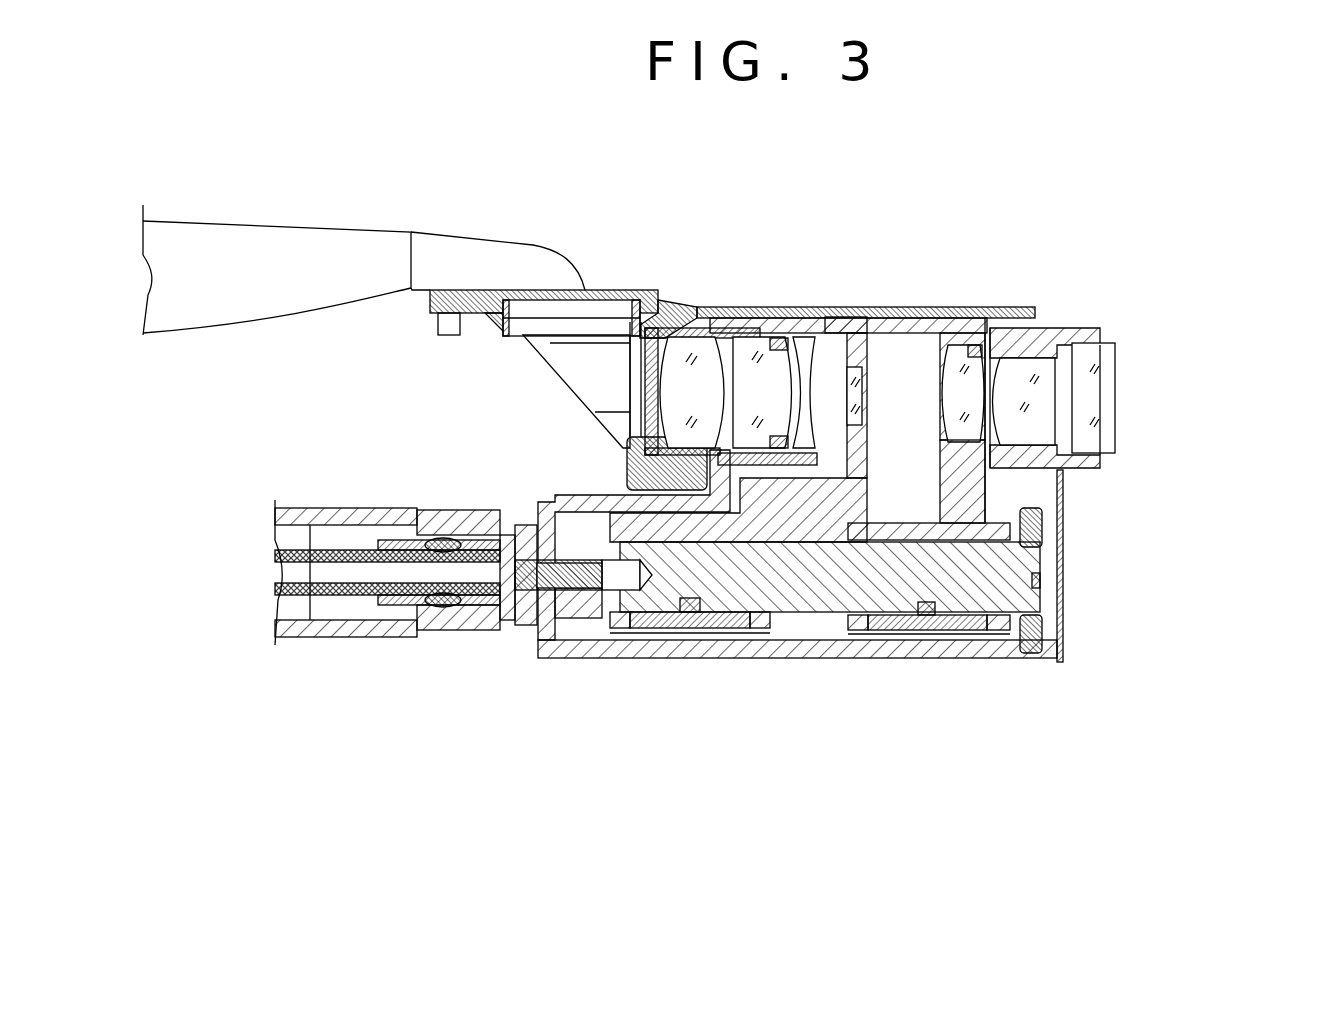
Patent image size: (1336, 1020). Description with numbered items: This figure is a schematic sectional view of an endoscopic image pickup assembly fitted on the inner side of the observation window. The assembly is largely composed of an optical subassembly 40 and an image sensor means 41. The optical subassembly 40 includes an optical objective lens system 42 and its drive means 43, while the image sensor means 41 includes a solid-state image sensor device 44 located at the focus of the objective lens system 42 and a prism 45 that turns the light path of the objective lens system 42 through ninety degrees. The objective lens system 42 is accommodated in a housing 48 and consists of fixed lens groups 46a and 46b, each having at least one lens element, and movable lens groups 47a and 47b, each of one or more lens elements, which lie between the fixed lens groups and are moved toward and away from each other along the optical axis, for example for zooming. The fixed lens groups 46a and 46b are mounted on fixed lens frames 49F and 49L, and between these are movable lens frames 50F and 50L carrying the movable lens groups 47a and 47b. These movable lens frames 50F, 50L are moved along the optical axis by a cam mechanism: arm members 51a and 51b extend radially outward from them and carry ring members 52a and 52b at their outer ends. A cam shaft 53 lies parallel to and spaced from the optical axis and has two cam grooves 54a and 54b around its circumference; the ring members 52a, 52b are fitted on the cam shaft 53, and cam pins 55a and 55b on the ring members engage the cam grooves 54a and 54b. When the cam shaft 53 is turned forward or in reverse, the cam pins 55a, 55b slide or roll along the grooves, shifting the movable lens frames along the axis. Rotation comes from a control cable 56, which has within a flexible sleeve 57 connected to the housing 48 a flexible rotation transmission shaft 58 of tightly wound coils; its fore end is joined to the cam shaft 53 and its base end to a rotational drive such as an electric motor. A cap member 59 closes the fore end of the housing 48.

The optical subassembly 40 is at (996, 700).
The image sensor means 41 is at (518, 355).
The optical objective lens system 42 is at (1138, 380).
The drive means 43 is at (524, 668).
The solid-state image sensor device 44 is at (595, 327).
The prism 45 is at (590, 388).
The fixed lens group 46a is at (1032, 415).
The fixed lens group 46b is at (717, 363).
The movable lens group 47a is at (970, 362).
The movable lens group 47b is at (862, 395).
The housing 48 is at (1013, 665).
The fixed lens frame 49F is at (1083, 332).
The fixed lens frame 49L is at (760, 470).
The movable lens frame 50F is at (962, 330).
The movable lens frame 50L is at (860, 318).
The arm member 51a is at (980, 492).
The arm member 51b is at (805, 482).
The ring member 52a is at (853, 630).
The ring member 52b is at (612, 628).
The cam shaft 53 is at (1027, 563).
The cam groove 54a is at (926, 616).
The cam groove 54b is at (687, 605).
The cam pin 55a is at (928, 615).
The cam pin 55b is at (692, 612).
The control cable 56 is at (310, 652).
The flexible sleeve 57 is at (313, 507).
The flexible rotation transmission shaft 58 is at (372, 598).
The cap member 59 is at (1060, 648).